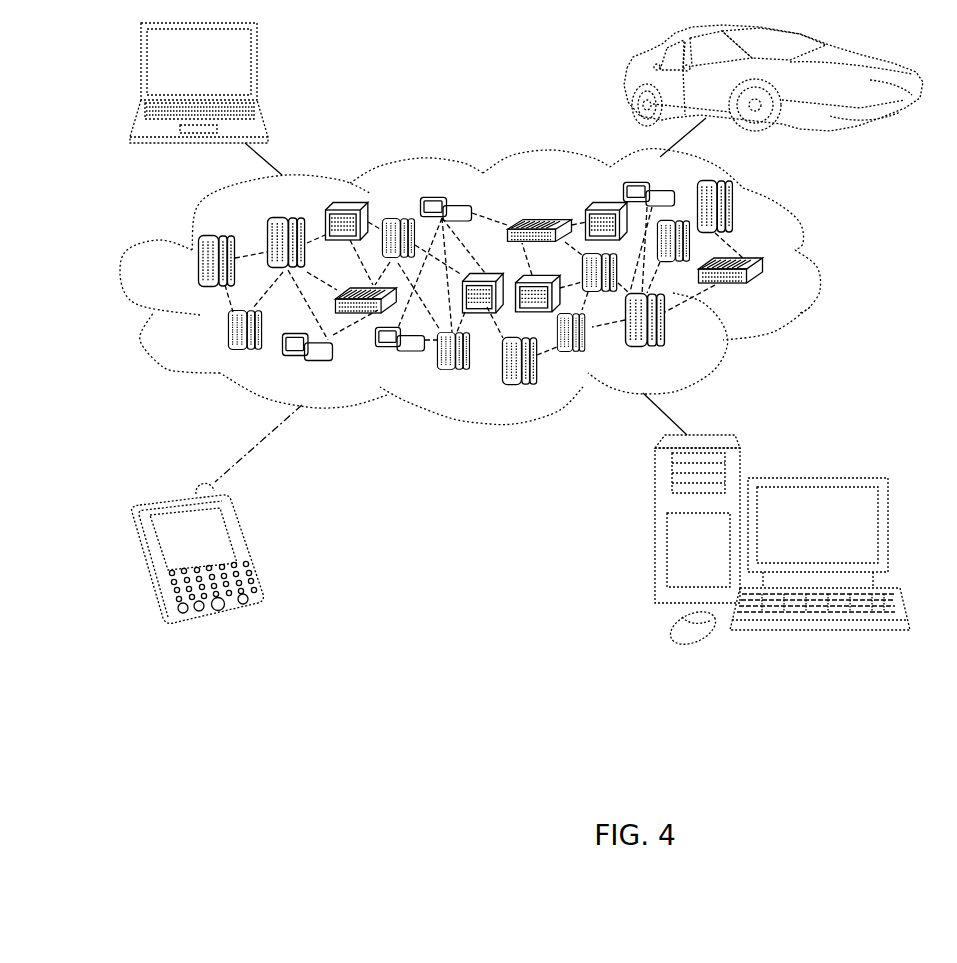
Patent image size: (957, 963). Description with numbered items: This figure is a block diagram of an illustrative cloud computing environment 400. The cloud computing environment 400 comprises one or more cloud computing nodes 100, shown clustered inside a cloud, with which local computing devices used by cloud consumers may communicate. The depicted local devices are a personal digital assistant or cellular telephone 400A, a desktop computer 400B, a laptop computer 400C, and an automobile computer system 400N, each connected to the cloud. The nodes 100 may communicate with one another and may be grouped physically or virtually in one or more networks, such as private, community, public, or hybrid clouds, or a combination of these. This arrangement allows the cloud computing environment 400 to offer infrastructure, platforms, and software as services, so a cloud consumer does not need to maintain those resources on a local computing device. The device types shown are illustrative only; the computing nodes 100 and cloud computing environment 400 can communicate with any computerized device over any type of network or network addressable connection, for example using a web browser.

The cloud computing environment 400 is at (822, 262).
The cloud computing node 100 is at (776, 294).
The personal digital assistant (PDA) or cellular telephone 400A is at (245, 545).
The desktop computer 400B is at (815, 475).
The laptop computer 400C is at (258, 68).
The automobile computer system 400N is at (630, 78).